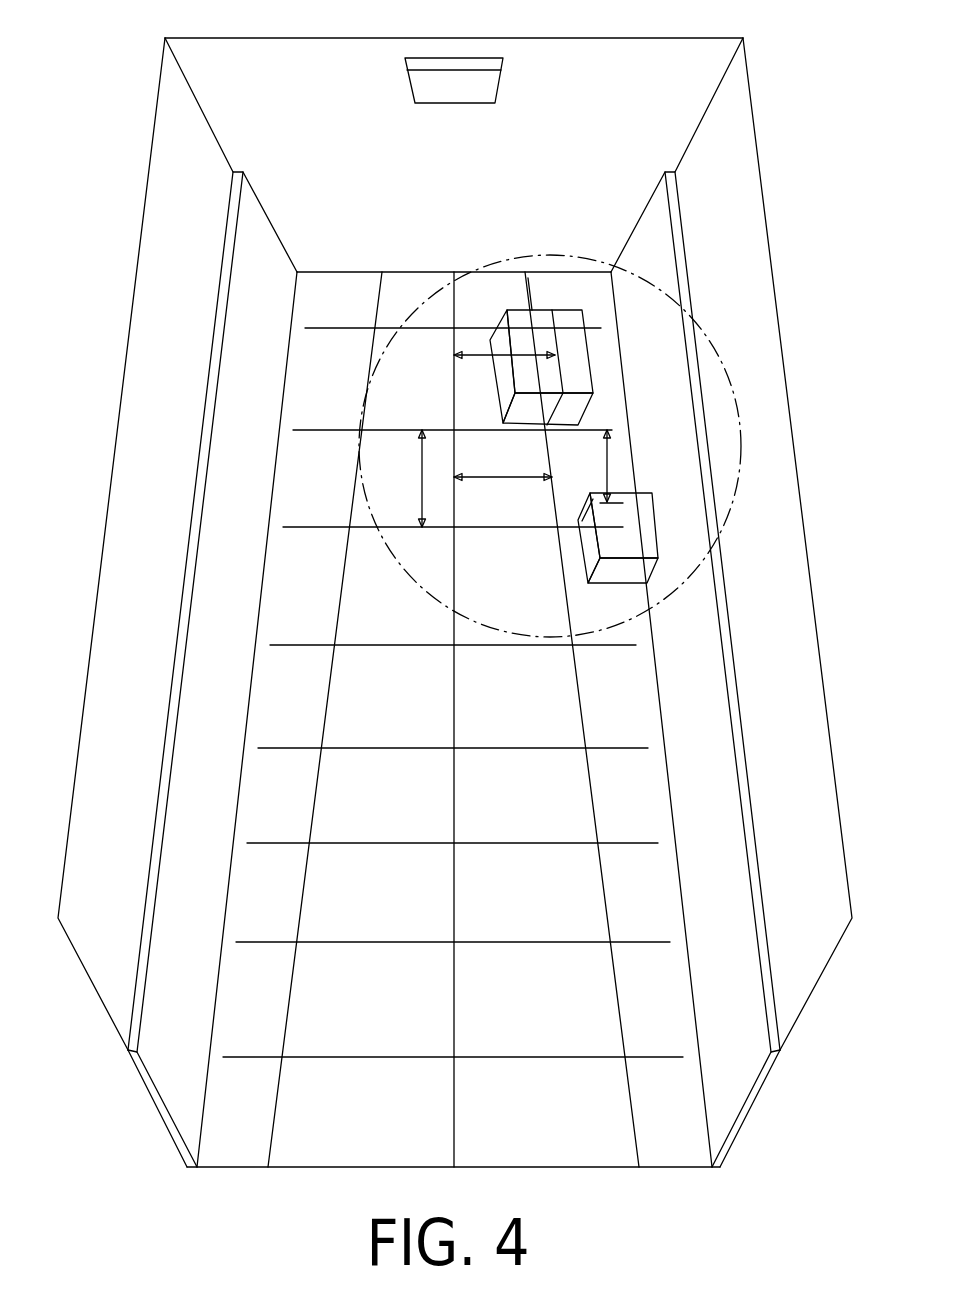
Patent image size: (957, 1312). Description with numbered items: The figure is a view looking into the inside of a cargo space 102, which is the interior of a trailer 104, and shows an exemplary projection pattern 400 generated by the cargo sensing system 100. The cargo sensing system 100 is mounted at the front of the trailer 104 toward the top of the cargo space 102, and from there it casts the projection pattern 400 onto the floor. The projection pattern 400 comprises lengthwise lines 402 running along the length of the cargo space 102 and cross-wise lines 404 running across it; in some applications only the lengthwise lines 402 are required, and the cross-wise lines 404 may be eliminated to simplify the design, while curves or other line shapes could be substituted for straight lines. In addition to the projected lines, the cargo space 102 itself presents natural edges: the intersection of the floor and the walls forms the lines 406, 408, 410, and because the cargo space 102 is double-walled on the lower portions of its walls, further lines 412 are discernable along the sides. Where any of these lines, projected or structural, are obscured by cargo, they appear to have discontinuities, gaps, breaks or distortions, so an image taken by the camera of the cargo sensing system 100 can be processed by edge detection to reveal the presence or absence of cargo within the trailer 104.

The cargo sensing system 100 is at (430, 80).
The cargo space 102 is at (210, 650).
The trailer 104 is at (758, 153).
The projection pattern 400 is at (364, 235).
The lengthwise lines 402 is at (338, 617).
The cross-wise lines 404 is at (375, 645).
The line formed by meeting of walls and floor 406 is at (232, 872).
The line formed by meeting of walls and floor 408 is at (487, 1165).
The line formed by meeting of walls and floor 410 is at (692, 985).
The double-wall lines 412 is at (213, 398).